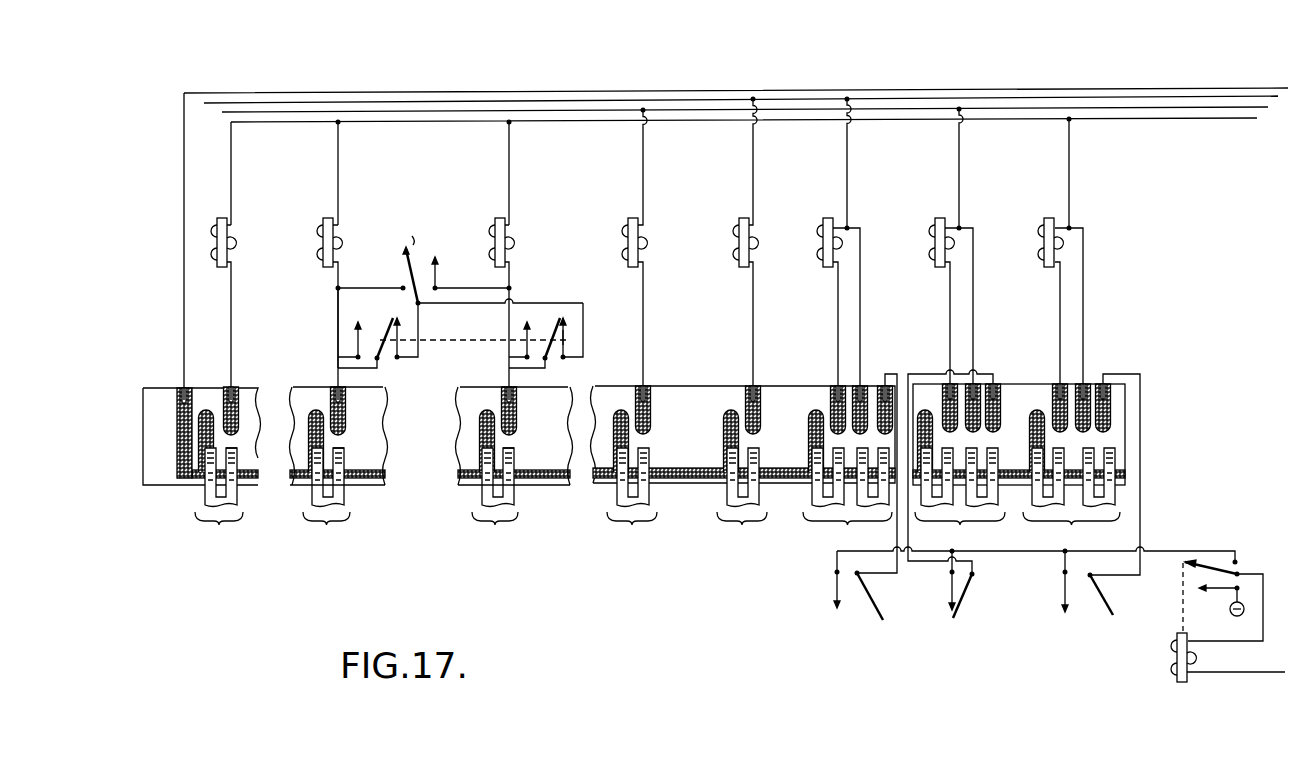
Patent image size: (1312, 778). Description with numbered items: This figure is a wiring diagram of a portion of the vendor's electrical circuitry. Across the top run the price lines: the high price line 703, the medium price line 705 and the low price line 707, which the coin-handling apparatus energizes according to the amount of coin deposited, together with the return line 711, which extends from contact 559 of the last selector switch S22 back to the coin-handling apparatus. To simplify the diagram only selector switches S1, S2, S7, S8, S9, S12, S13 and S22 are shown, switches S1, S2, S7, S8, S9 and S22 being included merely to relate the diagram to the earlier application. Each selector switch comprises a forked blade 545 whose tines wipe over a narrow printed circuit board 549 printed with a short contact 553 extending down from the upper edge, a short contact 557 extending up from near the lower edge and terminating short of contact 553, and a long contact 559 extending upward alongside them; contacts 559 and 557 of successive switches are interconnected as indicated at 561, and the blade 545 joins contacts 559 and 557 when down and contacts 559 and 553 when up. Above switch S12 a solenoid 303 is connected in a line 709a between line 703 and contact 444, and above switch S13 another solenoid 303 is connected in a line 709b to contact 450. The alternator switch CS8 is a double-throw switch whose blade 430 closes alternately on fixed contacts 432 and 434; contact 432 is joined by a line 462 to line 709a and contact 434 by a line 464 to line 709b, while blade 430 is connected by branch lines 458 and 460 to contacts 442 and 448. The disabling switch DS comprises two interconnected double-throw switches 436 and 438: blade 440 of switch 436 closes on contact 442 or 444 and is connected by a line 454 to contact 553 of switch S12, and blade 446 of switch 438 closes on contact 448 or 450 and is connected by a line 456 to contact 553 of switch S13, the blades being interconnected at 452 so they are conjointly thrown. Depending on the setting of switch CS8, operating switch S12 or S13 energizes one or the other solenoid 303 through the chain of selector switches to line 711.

The return line 711 is at (183, 183).
The low price line 707 is at (240, 103).
The medium price line 705 is at (270, 112).
The high price line 703 is at (1135, 120).
The line 709a is at (510, 172).
The line 709b is at (339, 170).
The solenoid 303 is at (221, 220).
The alternator switch CS8 is at (433, 240).
The blade 430 is at (406, 231).
The fixed contact 434 is at (403, 252).
The fixed contact 432 is at (437, 257).
The line 464 is at (381, 287).
The line 462 is at (484, 284).
The branch line 460 is at (420, 312).
The branch line 458 is at (578, 298).
The blade 440 is at (558, 315).
The fixed contact 442 is at (565, 315).
The double-throw switch 436 is at (572, 335).
The fixed contact 444 is at (525, 324).
The line 454 is at (547, 367).
The disabling switch DS is at (330, 352).
The double-throw switch 438 is at (352, 341).
The fixed contact 450 is at (354, 321).
The blade 446 is at (390, 319).
The fixed contact 448 is at (402, 320).
The line 456 is at (377, 368).
The interconnection 452 is at (458, 342).
The printed circuit board 549 is at (160, 393).
The contact 559 is at (208, 412).
The contact 553 is at (237, 402).
The contact 557 is at (253, 446).
The forked blade 545 is at (207, 492).
The interconnection 561 is at (297, 473).
The selector switch S22 is at (219, 530).
The selector switch S13 is at (339, 467).
The selector switch S12 is at (514, 467).
The selector switch S9 is at (632, 467).
The selector switch S8 is at (742, 467).
The selector switch S7 is at (848, 467).
The selector switch S2 is at (960, 466).
The selector switch S1 is at (1071, 466).